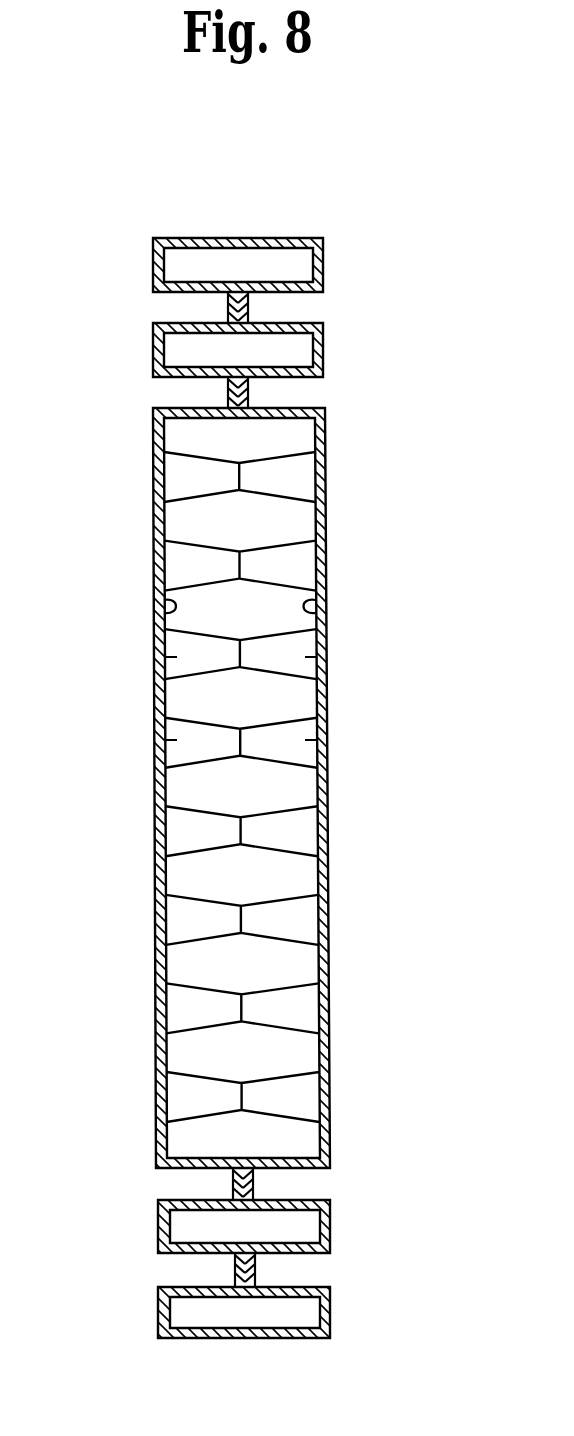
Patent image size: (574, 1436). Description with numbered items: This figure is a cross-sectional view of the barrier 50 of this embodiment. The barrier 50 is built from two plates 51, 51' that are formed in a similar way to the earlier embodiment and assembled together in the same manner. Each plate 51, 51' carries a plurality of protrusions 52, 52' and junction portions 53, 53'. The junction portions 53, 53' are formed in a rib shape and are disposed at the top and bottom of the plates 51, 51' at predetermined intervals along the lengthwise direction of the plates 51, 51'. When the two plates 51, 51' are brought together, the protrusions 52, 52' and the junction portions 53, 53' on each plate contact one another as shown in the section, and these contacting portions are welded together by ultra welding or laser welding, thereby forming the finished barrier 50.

The barrier 50 is at (255, 182).
The plate 51 is at (123, 611).
The plate 51' is at (365, 607).
The protrusions 52 is at (114, 698).
The protrusions 52' is at (374, 698).
The junction portions 53 is at (152, 793).
The junction portions 53' is at (335, 783).